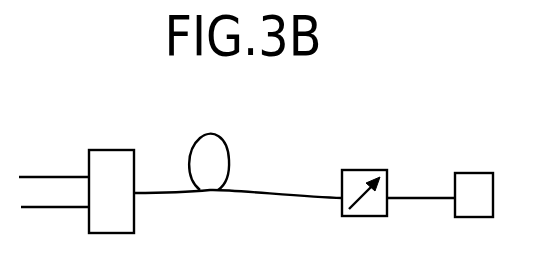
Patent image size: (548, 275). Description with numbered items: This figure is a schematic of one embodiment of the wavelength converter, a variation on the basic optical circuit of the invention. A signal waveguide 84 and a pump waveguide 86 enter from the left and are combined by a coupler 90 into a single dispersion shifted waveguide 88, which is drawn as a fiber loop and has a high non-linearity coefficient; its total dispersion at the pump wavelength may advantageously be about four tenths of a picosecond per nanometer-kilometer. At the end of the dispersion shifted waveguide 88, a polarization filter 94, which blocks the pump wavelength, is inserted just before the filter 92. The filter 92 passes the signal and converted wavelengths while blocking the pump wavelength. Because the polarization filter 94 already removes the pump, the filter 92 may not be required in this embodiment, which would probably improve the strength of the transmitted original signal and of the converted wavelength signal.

The signal waveguide 84 is at (40, 177).
The pump waveguide 86 is at (42, 207).
The coupler 90 is at (110, 150).
The dispersion shifted waveguide 88 is at (230, 155).
The polarization filter 94 is at (362, 170).
The filter 92 is at (472, 173).